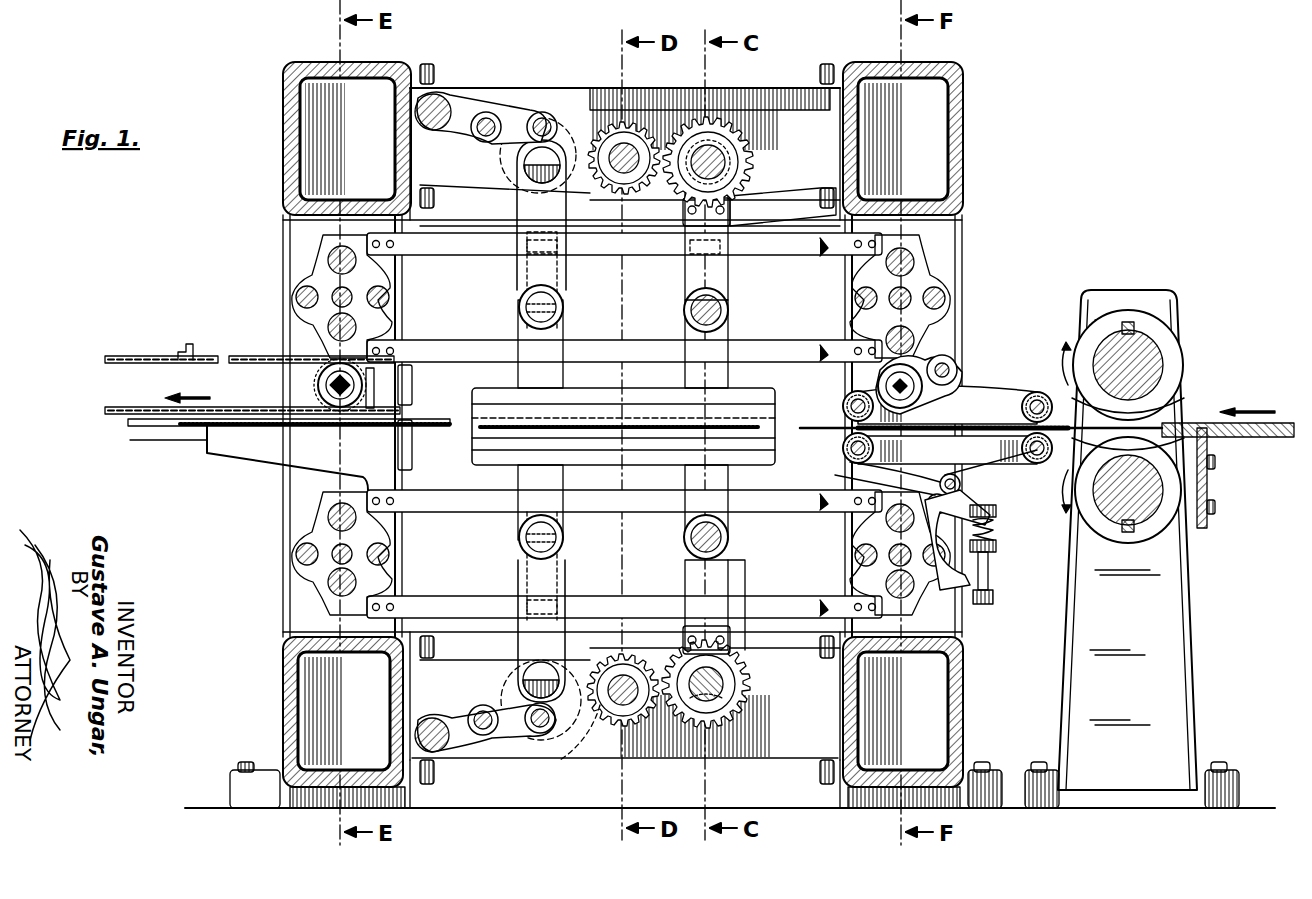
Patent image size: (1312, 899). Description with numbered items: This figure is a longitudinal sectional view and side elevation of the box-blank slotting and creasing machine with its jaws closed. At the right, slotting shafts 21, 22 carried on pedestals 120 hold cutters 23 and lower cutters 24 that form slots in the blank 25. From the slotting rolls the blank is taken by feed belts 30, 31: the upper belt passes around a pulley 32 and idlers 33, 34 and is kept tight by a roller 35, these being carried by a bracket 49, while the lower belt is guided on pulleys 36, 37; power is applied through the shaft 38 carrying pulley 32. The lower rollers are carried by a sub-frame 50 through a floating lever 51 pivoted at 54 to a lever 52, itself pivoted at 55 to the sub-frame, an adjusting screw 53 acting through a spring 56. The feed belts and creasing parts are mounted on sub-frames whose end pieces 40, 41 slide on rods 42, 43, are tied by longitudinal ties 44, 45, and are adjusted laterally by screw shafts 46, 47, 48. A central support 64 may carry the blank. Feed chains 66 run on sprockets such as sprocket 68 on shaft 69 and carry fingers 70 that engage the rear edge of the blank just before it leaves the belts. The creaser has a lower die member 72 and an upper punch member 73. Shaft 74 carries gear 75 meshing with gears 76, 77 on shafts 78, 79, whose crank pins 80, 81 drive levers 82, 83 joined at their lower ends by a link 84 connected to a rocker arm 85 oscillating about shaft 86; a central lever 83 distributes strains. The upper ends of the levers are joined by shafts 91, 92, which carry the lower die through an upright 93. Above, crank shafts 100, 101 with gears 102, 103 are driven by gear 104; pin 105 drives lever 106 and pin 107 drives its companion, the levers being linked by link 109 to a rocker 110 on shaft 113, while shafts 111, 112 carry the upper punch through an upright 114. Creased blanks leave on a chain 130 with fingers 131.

The shaft 21 is at (1150, 365).
The shaft 22 is at (1165, 515).
The cutter 23 is at (1178, 404).
The lower cutter 24 is at (1208, 480).
The blank 25 is at (207, 430).
The feed belt 30 is at (965, 395).
The feed belt 31 is at (995, 460).
The pulley 32 is at (894, 384).
The idler 33 is at (844, 404).
The idler 34 is at (1037, 394).
The roller 35 is at (958, 372).
The pulley 36 is at (846, 454).
The pulley 37 is at (970, 480).
The shaft 38 is at (880, 382).
The end piece 40 is at (318, 280).
The end piece 41 is at (920, 275).
The rod 42 is at (338, 256).
The rod 43 is at (906, 258).
The longitudinal tie 44 is at (467, 346).
The longitudinal tie 45 is at (460, 243).
The screw shaft 46 is at (340, 295).
The screw shaft 47 is at (298, 298).
The screw shaft 48 is at (387, 296).
The bracket 49 is at (949, 366).
The sub-frame 50 is at (852, 565).
The lever 51 is at (888, 510).
The lever 52 is at (960, 495).
The adjusting bolt or screw 53 is at (995, 598).
The pivot 54 is at (900, 472).
The pivot 55 is at (945, 585).
The spring 56 is at (995, 560).
The central support 64 is at (320, 470).
The feed chain 66 is at (412, 380).
The sprocket 68 is at (366, 395).
The shaft 69 is at (320, 385).
The transverse flange or finger 70 is at (410, 440).
The lower die member 72 is at (620, 470).
The upper punch member 73 is at (572, 418).
The shaft 74 is at (618, 165).
The gear 75 is at (605, 672).
The gear 76 is at (525, 675).
The gear 77 is at (735, 670).
The shaft 78 is at (500, 690).
The shaft 79 is at (725, 690).
The crank pin 80 is at (505, 660).
The crank pin 81 is at (728, 630).
The lever 82 is at (562, 590).
The lever 83 is at (730, 590).
The link 84 is at (582, 735).
The rocker arm 85 is at (485, 740).
The shaft 86 is at (438, 748).
The shaft 91 is at (690, 538).
The shaft 92 is at (522, 538).
The upright 93 is at (706, 390).
The crank shaft 100 is at (520, 164).
The crank shaft 101 is at (732, 150).
The gear 102 is at (524, 190).
The gear 103 is at (738, 200).
The gear 104 is at (684, 190).
The pin 105 is at (541, 132).
The lever 106 is at (560, 250).
The pin 107 is at (712, 150).
The link 109 is at (630, 125).
The rocker 110 is at (470, 110).
The shaft 111 is at (535, 306).
The shaft 112 is at (690, 312).
The shaft 113 is at (436, 105).
The upright 114 is at (623, 423).
The pedestal 120 is at (1175, 665).
The chain 130 is at (125, 404).
The finger or flange 131 is at (184, 346).